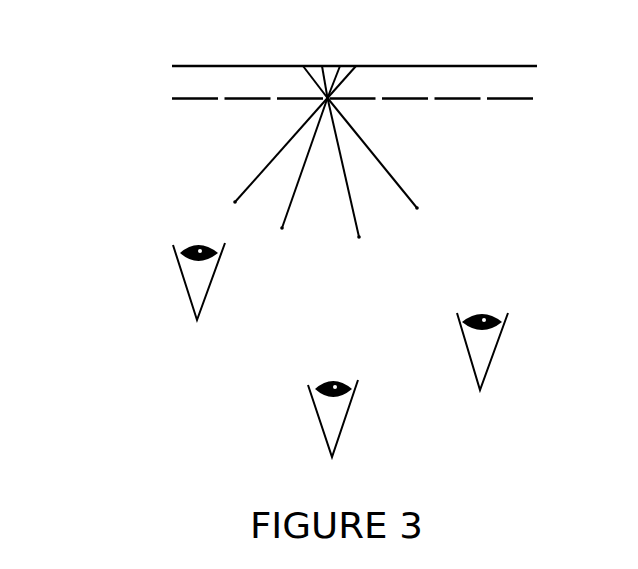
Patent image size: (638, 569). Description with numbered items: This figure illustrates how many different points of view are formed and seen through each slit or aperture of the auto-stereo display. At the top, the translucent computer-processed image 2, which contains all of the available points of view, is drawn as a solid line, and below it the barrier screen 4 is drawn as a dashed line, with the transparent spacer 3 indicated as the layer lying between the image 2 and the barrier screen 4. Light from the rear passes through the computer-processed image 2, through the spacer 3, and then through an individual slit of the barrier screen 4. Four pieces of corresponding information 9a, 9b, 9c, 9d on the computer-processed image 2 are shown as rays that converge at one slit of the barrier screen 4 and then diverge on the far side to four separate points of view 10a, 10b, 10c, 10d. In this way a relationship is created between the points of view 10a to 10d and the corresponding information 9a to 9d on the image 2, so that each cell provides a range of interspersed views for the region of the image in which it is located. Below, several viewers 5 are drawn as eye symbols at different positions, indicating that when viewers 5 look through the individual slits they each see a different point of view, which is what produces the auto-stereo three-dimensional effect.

The computer-processed image 2 is at (160, 60).
The spacer 3 is at (159, 83).
The barrier screen 4 is at (160, 106).
The viewer 5 is at (446, 330).
The corresponding information 9a is at (356, 65).
The corresponding information 9b is at (343, 65).
The corresponding information 9c is at (317, 65).
The corresponding information 9d is at (303, 65).
The point of view 10a is at (269, 160).
The point of view 10b is at (297, 177).
The point of view 10c is at (354, 182).
The point of view 10d is at (386, 169).